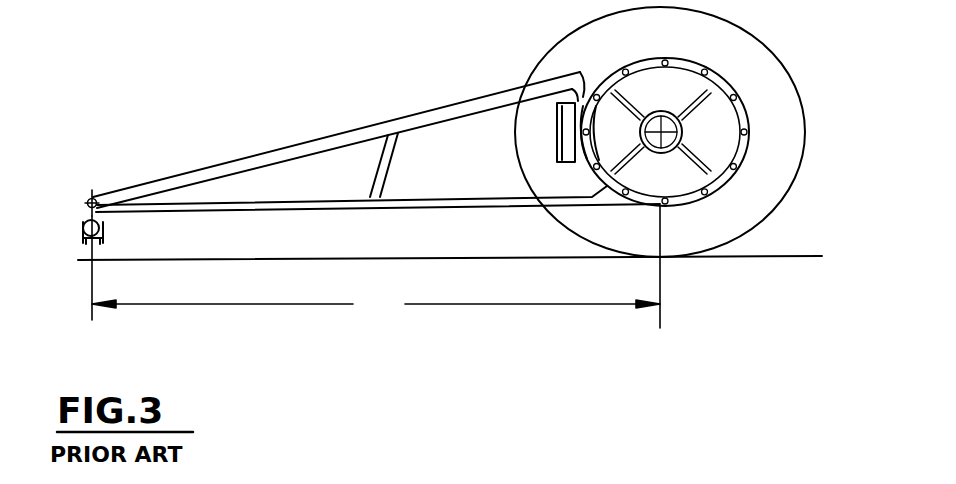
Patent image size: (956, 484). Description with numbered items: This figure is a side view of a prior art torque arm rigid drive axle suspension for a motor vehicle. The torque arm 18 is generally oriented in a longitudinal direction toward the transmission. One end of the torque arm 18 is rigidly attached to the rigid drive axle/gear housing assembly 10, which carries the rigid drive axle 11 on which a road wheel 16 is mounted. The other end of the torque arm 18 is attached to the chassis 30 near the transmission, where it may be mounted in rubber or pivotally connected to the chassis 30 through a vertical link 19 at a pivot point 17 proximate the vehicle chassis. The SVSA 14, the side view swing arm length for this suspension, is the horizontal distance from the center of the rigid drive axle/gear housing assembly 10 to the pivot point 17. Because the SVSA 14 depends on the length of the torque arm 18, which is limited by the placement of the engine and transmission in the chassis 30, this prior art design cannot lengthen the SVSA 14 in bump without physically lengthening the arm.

The rigid drive axle/gear housing assembly 10 is at (688, 62).
The rigid drive axle 11 is at (676, 137).
The SVSA 14 is at (376, 267).
The road wheel 16 is at (567, 44).
The pivot point 17 is at (88, 201).
The torque arm 18 is at (347, 133).
The vertical link 19 is at (100, 208).
The chassis 30 is at (80, 234).